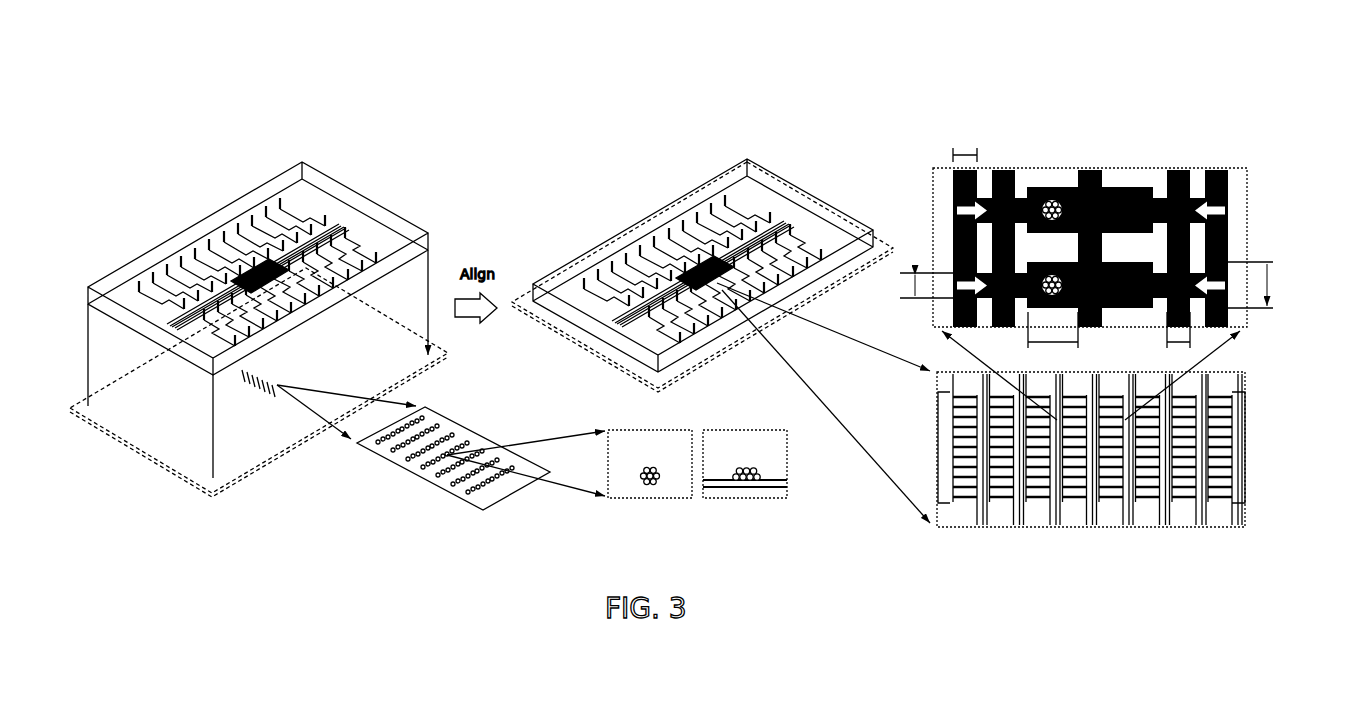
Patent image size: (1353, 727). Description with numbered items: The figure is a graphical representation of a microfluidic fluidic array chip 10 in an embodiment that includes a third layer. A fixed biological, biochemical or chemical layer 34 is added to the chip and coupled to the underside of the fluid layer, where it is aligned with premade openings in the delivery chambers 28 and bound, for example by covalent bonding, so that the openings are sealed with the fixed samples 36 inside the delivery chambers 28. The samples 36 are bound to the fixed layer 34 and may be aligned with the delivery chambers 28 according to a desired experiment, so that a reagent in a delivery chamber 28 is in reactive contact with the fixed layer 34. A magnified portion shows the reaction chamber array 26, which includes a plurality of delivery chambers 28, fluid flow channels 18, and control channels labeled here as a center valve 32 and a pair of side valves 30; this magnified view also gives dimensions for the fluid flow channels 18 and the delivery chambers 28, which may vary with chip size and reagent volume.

The fluidic array chip 10 is at (456, 108).
The fluid flow channels 18 is at (1059, 223).
The reaction chamber array 26 is at (1242, 416).
The delivery chambers 28 is at (1049, 186).
The side valves 30 is at (1008, 170).
The center valve 32 is at (1088, 170).
The fixed layer 34 is at (461, 511).
The samples 36 is at (762, 483).